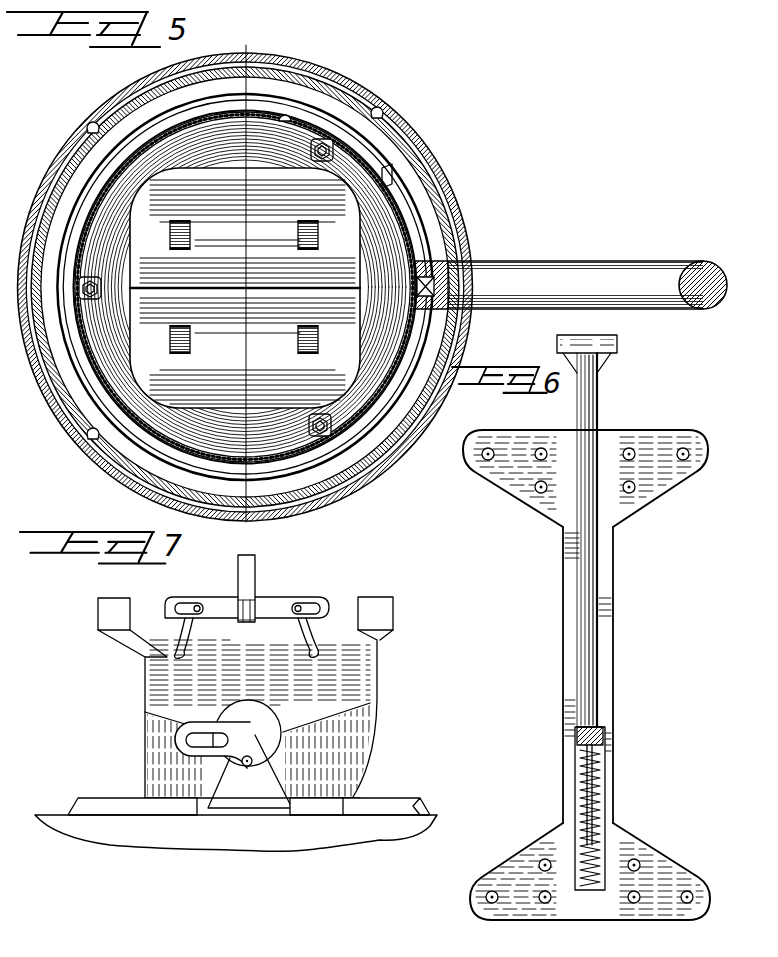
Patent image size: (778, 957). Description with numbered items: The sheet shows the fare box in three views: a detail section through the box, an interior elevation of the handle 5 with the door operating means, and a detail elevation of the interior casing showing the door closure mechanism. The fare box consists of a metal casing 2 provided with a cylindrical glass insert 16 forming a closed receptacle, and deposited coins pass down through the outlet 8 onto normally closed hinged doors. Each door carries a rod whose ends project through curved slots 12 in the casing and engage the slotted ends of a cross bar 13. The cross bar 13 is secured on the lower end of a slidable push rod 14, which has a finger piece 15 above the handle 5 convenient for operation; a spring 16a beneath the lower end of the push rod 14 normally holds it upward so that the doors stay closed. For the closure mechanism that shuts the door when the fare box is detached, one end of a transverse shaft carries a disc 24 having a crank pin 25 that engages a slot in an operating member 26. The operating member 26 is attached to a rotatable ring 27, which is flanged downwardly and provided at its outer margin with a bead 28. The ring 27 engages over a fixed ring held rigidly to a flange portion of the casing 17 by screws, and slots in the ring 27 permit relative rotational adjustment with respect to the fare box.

In FIG. 5, the metal casing 2 is at (408, 242).
In FIG. 5, the handle 5 is at (538, 275).
In FIG. 6, the handle 5 is at (607, 653).
In FIG. 5, the outlet 8 is at (247, 287).
In FIG. 7, the curved slots 12 is at (315, 648).
In FIG. 7, the cross bar 13 is at (283, 603).
In FIG. 5, the push rod 14 is at (437, 283).
In FIG. 6, the push rod 14 is at (593, 603).
In FIG. 7, the push rod 14 is at (255, 580).
In FIG. 6, the finger piece 15 is at (612, 350).
In FIG. 5, the cylindrical glass insert 16 is at (285, 118).
In FIG. 6, the spring 16a is at (597, 807).
In FIG. 7, the casing 17 is at (363, 730).
In FIG. 7, the disc 24 is at (268, 730).
In FIG. 7, the crank pin 25 is at (249, 756).
In FIG. 7, the operating member 26 is at (268, 792).
In FIG. 5, the rotatable ring 27 is at (393, 150).
In FIG. 7, the rotatable ring 27 is at (333, 823).
In FIG. 5, the bead 28 is at (441, 198).